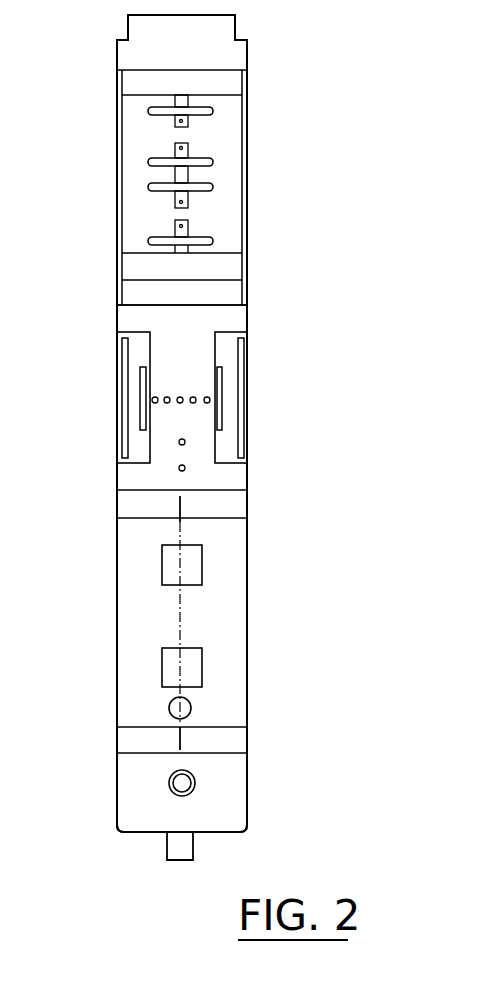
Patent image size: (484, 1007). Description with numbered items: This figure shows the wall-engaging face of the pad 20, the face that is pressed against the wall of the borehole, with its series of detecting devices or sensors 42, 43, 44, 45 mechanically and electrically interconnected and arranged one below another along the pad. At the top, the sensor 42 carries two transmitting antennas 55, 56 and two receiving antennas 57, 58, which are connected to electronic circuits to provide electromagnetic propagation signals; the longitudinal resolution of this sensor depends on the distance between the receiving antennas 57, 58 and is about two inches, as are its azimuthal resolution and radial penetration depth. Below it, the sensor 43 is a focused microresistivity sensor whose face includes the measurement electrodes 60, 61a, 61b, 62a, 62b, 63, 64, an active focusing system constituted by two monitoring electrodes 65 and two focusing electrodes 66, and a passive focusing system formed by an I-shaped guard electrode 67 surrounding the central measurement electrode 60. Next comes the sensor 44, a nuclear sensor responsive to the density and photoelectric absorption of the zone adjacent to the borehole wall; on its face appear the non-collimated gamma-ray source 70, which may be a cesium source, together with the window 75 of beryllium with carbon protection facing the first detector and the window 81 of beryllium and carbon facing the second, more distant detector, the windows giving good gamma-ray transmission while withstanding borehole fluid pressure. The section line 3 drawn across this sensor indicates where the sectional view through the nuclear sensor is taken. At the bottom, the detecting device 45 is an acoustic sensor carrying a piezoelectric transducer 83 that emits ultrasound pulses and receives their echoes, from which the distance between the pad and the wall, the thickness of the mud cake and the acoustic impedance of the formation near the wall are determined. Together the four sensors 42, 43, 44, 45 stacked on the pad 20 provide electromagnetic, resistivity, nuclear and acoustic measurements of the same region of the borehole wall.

The section line 3- 3 is at (170, 740).
The pad 20 is at (110, 53).
The sensor 42 is at (108, 145).
The sensor 43 is at (109, 392).
The sensor 44 is at (108, 610).
The detecting device 45 is at (108, 802).
The transmitting antenna 55 is at (213, 111).
The transmitting antenna 56 is at (213, 241).
The receiving antenna 57 is at (213, 163).
The receiving antenna 58 is at (213, 187).
The measurement electrode 60 is at (182, 398).
The measurement electrode 61a is at (195, 402).
The measurement electrode 61b is at (167, 403).
The measurement electrode 62a is at (209, 400).
The measurement electrode 62b is at (153, 403).
The measurement electrode 63 is at (185, 442).
The measurement electrode 64 is at (185, 468).
The monitoring electrode 65 is at (143, 372).
The focusing electrode 66 is at (122, 345).
The guard electrode 67 is at (245, 312).
The source 70 is at (192, 709).
The window 75 is at (197, 666).
The window 81 is at (197, 568).
The piezoelectric transducer 83 is at (196, 783).